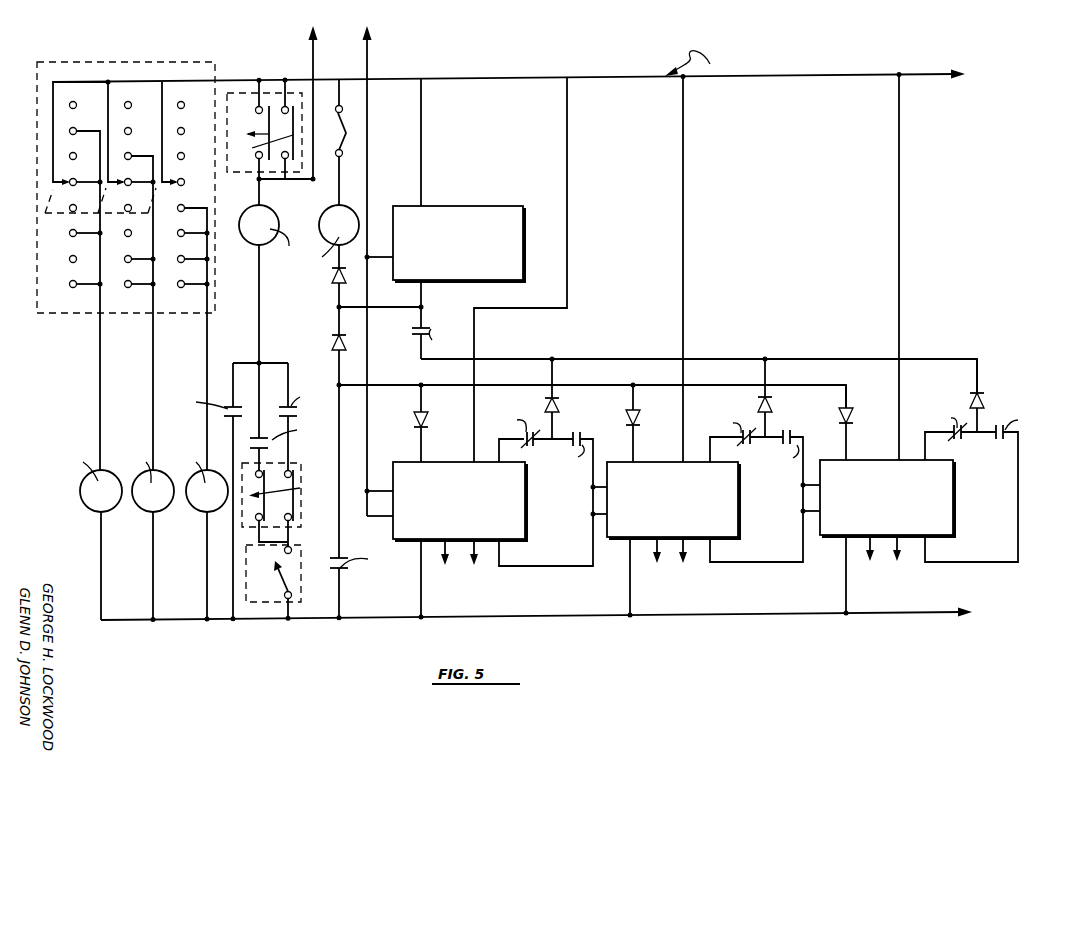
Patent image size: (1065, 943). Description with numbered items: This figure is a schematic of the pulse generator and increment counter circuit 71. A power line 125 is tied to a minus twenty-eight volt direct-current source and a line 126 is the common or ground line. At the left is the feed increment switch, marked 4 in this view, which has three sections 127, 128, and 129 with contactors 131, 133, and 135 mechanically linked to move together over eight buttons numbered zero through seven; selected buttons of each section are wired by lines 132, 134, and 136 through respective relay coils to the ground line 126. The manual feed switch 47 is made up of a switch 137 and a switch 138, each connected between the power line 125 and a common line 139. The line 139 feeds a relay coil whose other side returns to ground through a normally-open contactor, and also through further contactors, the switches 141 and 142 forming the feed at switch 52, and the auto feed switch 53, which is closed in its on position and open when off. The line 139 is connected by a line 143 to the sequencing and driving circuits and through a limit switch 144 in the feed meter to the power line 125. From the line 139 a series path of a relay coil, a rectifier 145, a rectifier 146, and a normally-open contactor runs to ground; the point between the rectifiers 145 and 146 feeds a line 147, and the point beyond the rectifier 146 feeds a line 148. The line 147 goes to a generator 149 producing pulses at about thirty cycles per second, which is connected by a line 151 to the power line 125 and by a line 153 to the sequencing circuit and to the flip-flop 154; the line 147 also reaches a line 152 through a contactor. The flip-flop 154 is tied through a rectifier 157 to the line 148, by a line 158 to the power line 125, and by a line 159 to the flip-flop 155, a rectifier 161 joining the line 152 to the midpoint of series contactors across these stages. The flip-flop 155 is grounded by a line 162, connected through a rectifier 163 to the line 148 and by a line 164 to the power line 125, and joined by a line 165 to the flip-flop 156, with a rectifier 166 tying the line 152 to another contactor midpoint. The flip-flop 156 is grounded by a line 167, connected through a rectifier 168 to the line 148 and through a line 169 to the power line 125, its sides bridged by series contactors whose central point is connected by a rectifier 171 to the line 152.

The stepping switch selector 4 is at (36, 155).
The manual feed switch 47 is at (264, 115).
The feed at switch 52 is at (294, 462).
The auto feed switch 53 is at (295, 578).
The pulse generator and increment counter circuit 71 is at (698, 63).
The power line 125 is at (815, 76).
The ground line 126 is at (930, 614).
The section 127 is at (99, 125).
The section 128 is at (152, 157).
The section 129 is at (208, 205).
The contactor 131 is at (53, 118).
The line 132 is at (100, 376).
The contactor 133 is at (108, 82).
The line 134 is at (153, 383).
The contactor 135 is at (162, 97).
The line 136 is at (207, 358).
The switch 137 is at (249, 126).
The switch 138 is at (261, 145).
The line 139 is at (308, 181).
The switch 141 is at (251, 399).
The switch 142 is at (294, 509).
The line 143 is at (313, 52).
The limit switch 144 is at (347, 133).
The rectifier 145 is at (334, 280).
The rectifier 146 is at (333, 343).
The line 147 is at (387, 296).
The line 148 is at (388, 374).
The generator 149 is at (443, 212).
The line 151 is at (421, 155).
The line 152 is at (694, 336).
The line 153 is at (367, 58).
The flip-flop 154 is at (511, 511).
The flip-flop 155 is at (728, 506).
The flip-flop 156 is at (942, 503).
The rectifier 157 is at (428, 418).
The line 158 is at (567, 226).
The line 159 is at (540, 566).
The rectifier 161 is at (559, 405).
The line 162 is at (630, 590).
The rectifier 163 is at (636, 413).
The line 164 is at (683, 224).
The line 165 is at (762, 562).
The rectifier 166 is at (771, 405).
The line 167 is at (846, 590).
The rectifier 168 is at (848, 412).
The line 169 is at (899, 234).
The rectifier 171 is at (985, 400).